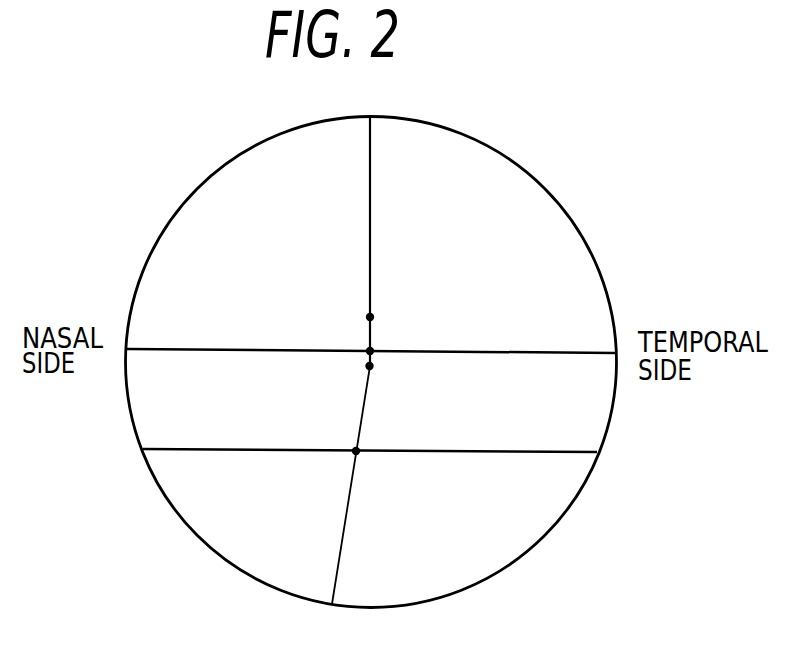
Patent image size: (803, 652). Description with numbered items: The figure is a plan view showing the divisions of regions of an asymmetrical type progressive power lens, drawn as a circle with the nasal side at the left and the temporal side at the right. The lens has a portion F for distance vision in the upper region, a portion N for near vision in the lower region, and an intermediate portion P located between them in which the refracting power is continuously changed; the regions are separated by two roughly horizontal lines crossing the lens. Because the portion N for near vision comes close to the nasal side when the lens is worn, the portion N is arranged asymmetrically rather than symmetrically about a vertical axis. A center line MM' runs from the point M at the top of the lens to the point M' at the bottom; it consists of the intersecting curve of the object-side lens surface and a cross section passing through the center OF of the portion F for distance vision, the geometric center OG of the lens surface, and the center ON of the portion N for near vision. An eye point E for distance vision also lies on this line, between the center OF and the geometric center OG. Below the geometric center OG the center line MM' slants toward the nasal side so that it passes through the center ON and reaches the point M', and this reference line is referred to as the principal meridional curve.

The center line endpoint M is at (370, 225).
The center line endpoint M' is at (341, 501).
The center of the portion for distance vision OF is at (385, 302).
The eye point for distance vision E is at (378, 338).
The geometric center of the lens surface OG is at (386, 370).
The center of the portion for near vision ON is at (371, 467).
The portion for distance vision F is at (535, 315).
The intermediate portion P is at (541, 403).
The portion for near vision N is at (531, 497).